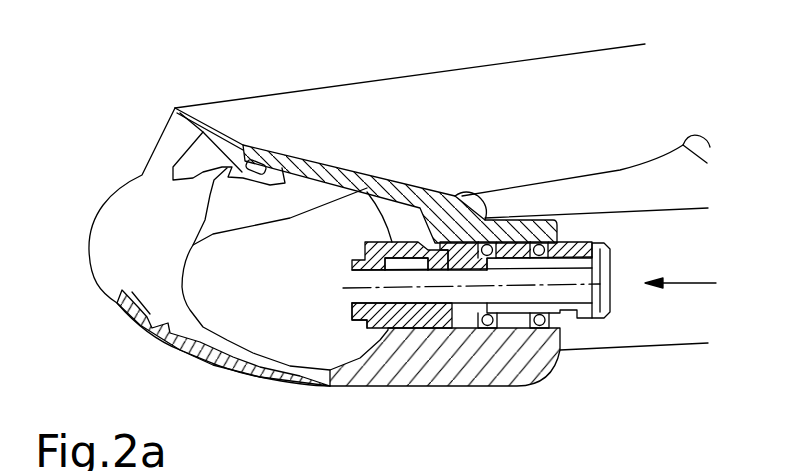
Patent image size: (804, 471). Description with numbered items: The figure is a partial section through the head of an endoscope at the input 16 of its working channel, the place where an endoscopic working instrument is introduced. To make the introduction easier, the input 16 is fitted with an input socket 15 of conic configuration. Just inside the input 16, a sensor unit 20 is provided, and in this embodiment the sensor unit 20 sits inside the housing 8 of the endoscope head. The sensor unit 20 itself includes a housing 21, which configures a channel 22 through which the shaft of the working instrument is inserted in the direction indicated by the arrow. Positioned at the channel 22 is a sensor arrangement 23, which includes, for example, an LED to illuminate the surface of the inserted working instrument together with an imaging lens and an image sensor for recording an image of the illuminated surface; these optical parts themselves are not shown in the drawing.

The housing 8 is at (527, 376).
The input socket 15 is at (607, 316).
The input 16 is at (655, 311).
The sensor unit 20 is at (352, 330).
The housing 21 is at (385, 317).
The channel 22 is at (363, 282).
The sensor arrangement 23 is at (408, 265).